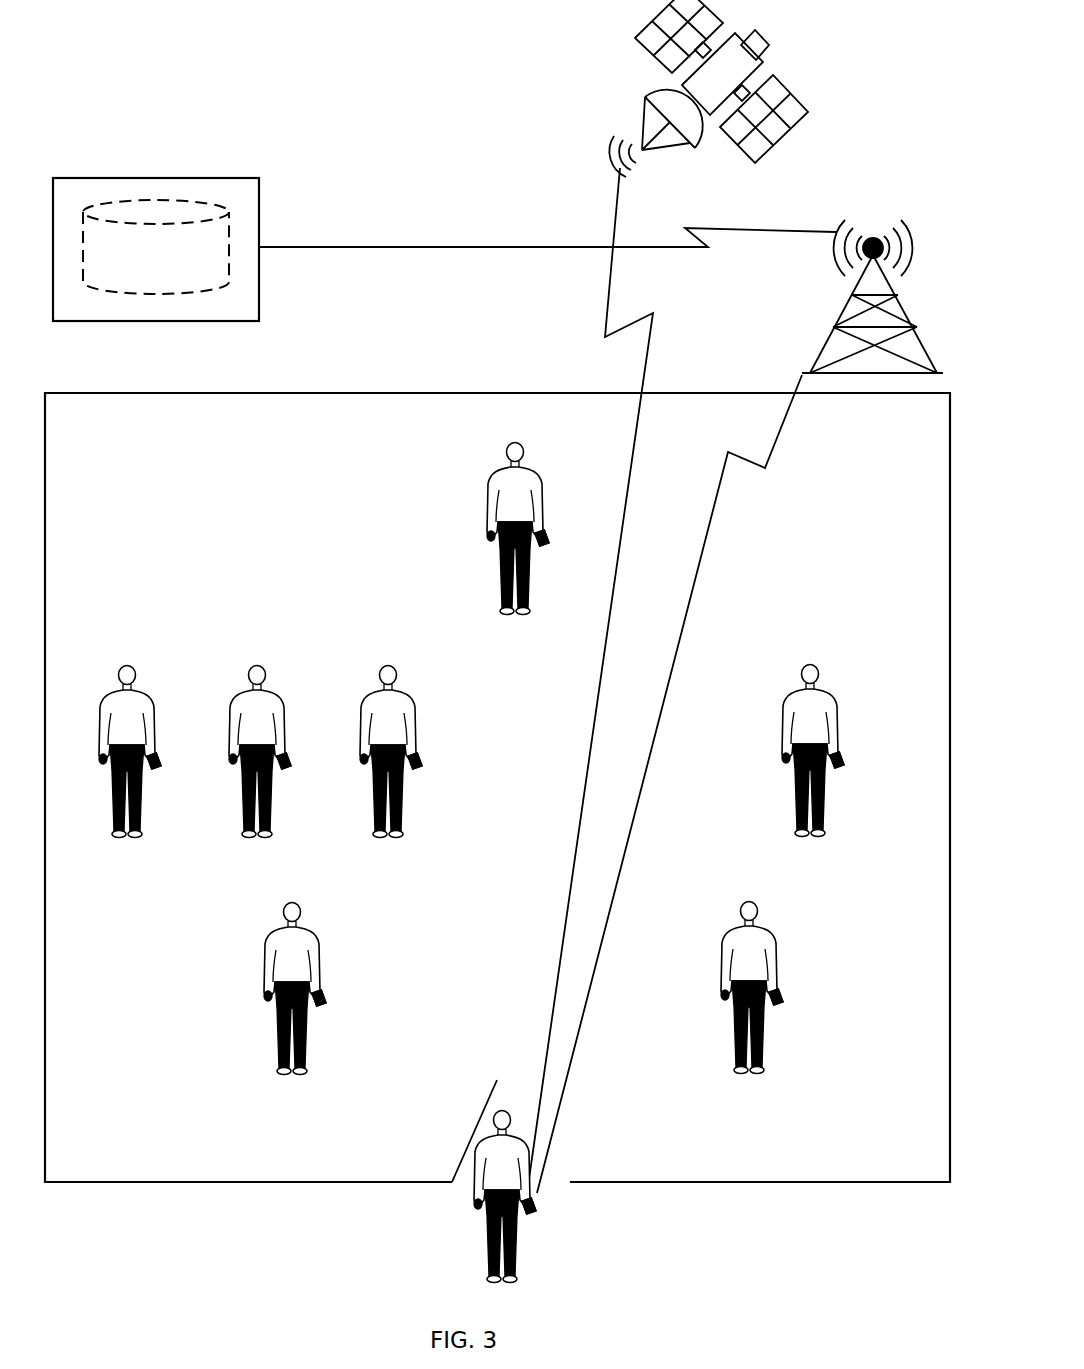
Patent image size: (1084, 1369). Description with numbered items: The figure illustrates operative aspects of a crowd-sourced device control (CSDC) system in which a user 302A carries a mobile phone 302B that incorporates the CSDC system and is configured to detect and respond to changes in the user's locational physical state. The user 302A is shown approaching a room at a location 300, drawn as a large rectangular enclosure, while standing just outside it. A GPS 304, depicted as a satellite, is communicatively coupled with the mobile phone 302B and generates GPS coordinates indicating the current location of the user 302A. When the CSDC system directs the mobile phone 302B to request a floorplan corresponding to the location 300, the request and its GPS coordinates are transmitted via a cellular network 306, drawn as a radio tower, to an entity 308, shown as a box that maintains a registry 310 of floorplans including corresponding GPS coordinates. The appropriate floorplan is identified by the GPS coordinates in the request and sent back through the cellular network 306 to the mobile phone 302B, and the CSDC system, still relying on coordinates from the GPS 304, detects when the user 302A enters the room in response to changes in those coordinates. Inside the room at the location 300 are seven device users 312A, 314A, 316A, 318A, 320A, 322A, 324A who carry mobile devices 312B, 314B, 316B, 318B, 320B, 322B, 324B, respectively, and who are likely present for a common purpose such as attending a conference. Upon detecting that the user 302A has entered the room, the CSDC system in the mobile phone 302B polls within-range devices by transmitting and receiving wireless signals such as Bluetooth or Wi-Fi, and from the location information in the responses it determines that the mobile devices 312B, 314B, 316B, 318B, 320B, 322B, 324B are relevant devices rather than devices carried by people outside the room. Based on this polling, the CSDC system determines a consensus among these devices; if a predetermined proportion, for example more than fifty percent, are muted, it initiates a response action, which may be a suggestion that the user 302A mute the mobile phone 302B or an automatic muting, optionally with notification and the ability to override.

The location 300 is at (386, 389).
The user 302A is at (472, 1218).
The mobile phone 302B is at (538, 1210).
The GPS 304 is at (643, 100).
The cellular network 306 is at (879, 221).
The entity 308 is at (260, 205).
The registry 310 is at (148, 200).
The device user 312A is at (133, 668).
The mobile device 312B is at (156, 765).
The device user 314A is at (263, 668).
The mobile device 314B is at (286, 765).
The device user 316A is at (394, 668).
The mobile device 316B is at (417, 765).
The device user 318A is at (505, 450).
The mobile device 318B is at (546, 532).
The device user 320A is at (818, 667).
The mobile device 320B is at (841, 760).
The device user 322A is at (757, 907).
The mobile device 322B is at (780, 998).
The device user 324A is at (300, 908).
The mobile device 324B is at (323, 1000).